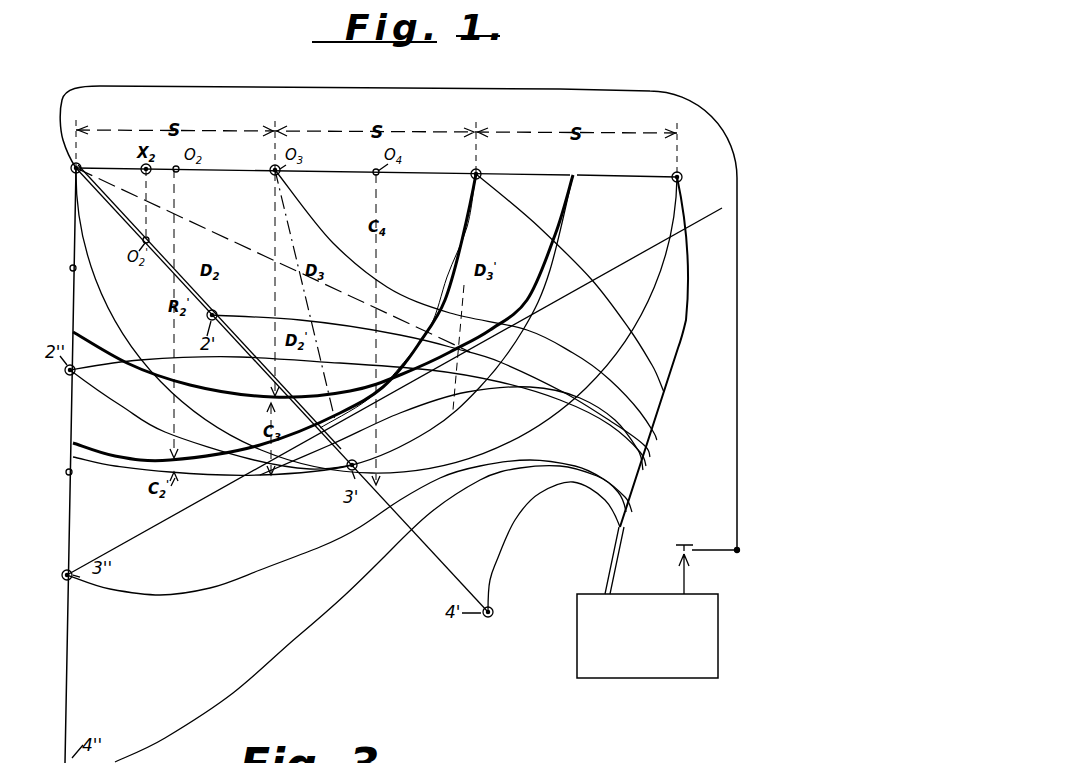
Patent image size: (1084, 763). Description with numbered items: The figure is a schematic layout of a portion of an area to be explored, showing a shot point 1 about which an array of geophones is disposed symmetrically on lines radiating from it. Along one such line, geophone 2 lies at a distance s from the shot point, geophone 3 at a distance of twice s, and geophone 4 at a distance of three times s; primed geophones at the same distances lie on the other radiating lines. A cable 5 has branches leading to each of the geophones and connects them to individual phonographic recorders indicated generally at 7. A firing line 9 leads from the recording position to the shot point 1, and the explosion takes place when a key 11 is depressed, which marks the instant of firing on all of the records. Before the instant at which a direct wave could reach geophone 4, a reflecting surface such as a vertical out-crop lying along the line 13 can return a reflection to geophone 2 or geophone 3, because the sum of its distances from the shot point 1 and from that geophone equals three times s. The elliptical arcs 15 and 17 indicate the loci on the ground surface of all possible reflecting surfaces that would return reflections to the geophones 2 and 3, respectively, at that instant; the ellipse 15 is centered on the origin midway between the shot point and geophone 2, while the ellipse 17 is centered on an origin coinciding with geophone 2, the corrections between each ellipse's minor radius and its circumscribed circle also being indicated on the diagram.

The shot point 1 is at (72, 166).
The geophone 2 is at (271, 167).
The geophone 3 is at (473, 170).
The geophone 4 is at (674, 173).
The cable 5 is at (606, 574).
The phonographic recorders 7 is at (651, 680).
The firing line 9 is at (738, 197).
The key 11 is at (717, 553).
The out-crop line 13 is at (651, 248).
The elliptical arc 15 is at (108, 457).
The elliptical arc 17 is at (243, 393).